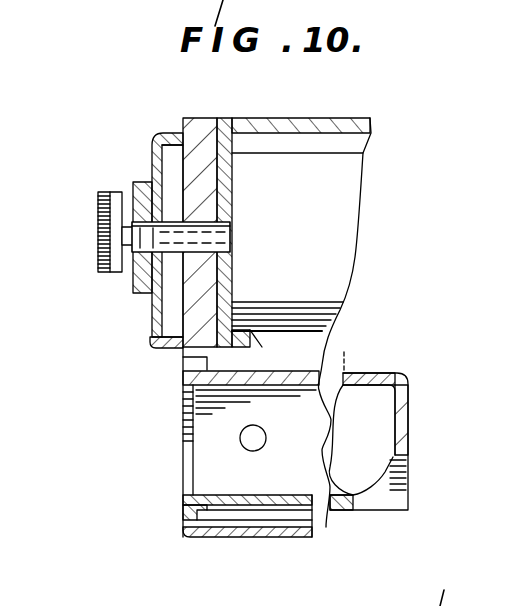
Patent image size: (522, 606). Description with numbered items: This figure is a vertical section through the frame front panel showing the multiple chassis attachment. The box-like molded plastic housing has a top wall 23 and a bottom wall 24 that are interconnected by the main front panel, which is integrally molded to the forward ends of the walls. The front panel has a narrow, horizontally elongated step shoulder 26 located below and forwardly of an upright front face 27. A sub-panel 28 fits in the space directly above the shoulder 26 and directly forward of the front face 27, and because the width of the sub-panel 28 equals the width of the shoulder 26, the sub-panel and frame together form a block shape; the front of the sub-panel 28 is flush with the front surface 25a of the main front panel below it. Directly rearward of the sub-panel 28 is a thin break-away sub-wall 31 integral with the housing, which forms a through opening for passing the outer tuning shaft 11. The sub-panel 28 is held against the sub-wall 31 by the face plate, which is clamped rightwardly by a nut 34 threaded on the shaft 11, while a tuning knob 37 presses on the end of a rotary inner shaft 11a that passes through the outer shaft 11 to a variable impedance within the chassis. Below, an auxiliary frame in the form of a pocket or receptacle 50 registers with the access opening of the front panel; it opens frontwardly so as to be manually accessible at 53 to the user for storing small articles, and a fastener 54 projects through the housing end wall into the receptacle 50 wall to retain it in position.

The tuning shaft 11 is at (230, 216).
The rotary inner shaft 11a is at (232, 240).
The top wall 23 is at (352, 116).
The bottom wall 24 is at (207, 536).
The front surface of the main front panel 25a is at (182, 372).
The step shoulder 26 is at (200, 337).
The front face 27 is at (232, 284).
The sub-panel 28 is at (203, 114).
The sub-wall 31 is at (232, 174).
The nut 34 is at (135, 182).
The tuning knob 37 is at (100, 224).
The receptacle 50 is at (420, 391).
The manually accessible location 53 is at (178, 445).
The fastener 54 is at (257, 451).